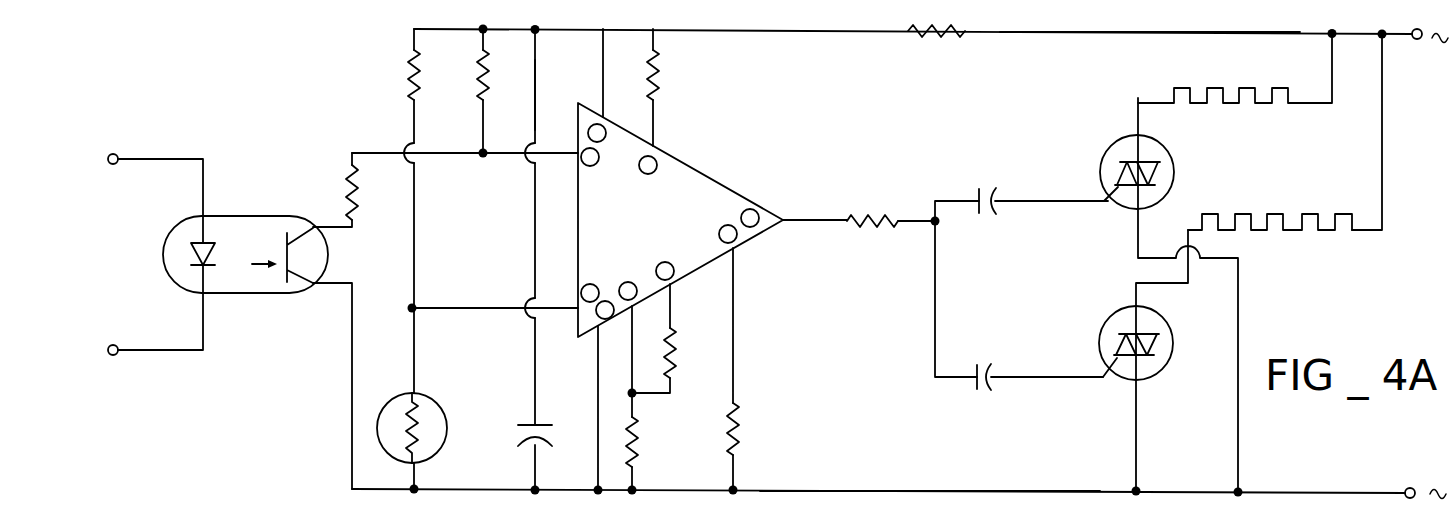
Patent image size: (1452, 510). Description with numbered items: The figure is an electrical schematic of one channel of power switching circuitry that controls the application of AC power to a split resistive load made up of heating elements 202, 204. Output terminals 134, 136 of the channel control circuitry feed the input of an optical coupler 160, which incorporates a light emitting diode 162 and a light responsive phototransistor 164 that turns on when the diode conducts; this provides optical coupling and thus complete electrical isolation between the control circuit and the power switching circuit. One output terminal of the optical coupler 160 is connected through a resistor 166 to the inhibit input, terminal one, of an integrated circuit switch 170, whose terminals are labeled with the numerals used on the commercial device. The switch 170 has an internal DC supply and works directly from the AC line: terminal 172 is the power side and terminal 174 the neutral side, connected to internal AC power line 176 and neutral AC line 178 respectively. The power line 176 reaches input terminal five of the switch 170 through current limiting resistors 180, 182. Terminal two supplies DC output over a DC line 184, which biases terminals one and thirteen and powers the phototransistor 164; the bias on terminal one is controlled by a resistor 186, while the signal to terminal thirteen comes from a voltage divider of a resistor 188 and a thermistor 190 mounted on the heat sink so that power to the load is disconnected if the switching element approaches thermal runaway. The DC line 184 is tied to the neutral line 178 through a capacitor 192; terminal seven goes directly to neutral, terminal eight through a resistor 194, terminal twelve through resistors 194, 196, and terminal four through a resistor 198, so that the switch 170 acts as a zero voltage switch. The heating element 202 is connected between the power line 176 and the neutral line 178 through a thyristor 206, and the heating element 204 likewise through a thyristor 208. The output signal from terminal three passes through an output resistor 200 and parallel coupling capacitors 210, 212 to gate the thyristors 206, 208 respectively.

The output terminal 134 is at (118, 153).
The output terminal 136 is at (110, 356).
The optical coupler 160 is at (248, 208).
The light emitting diode 162 is at (182, 247).
The phototransistor 164 is at (293, 283).
The resistor 166 is at (347, 178).
The integrated circuit switch 170 is at (729, 184).
The terminal 172 is at (1413, 45).
The terminal 174 is at (1405, 488).
The AC power line 176 is at (1078, 34).
The neutral AC line 178 is at (922, 490).
The current limiting resistor 180 is at (932, 37).
The current limiting resistor 182 is at (660, 87).
The DC line 184 is at (513, 31).
The resistor 186 is at (478, 77).
The resistor 188 is at (408, 88).
The thermistor 190 is at (435, 400).
The capacitor 192 is at (527, 442).
The resistor 194 is at (637, 423).
The resistor 196 is at (675, 362).
The resistor 198 is at (740, 415).
The output resistor 200 is at (865, 215).
The heating element 202 is at (1230, 103).
The heating element 204 is at (1290, 228).
The thyristor 206 is at (1173, 157).
The thyristor 208 is at (1102, 323).
The coupling capacitor 210 is at (978, 190).
The coupling capacitor 212 is at (980, 392).